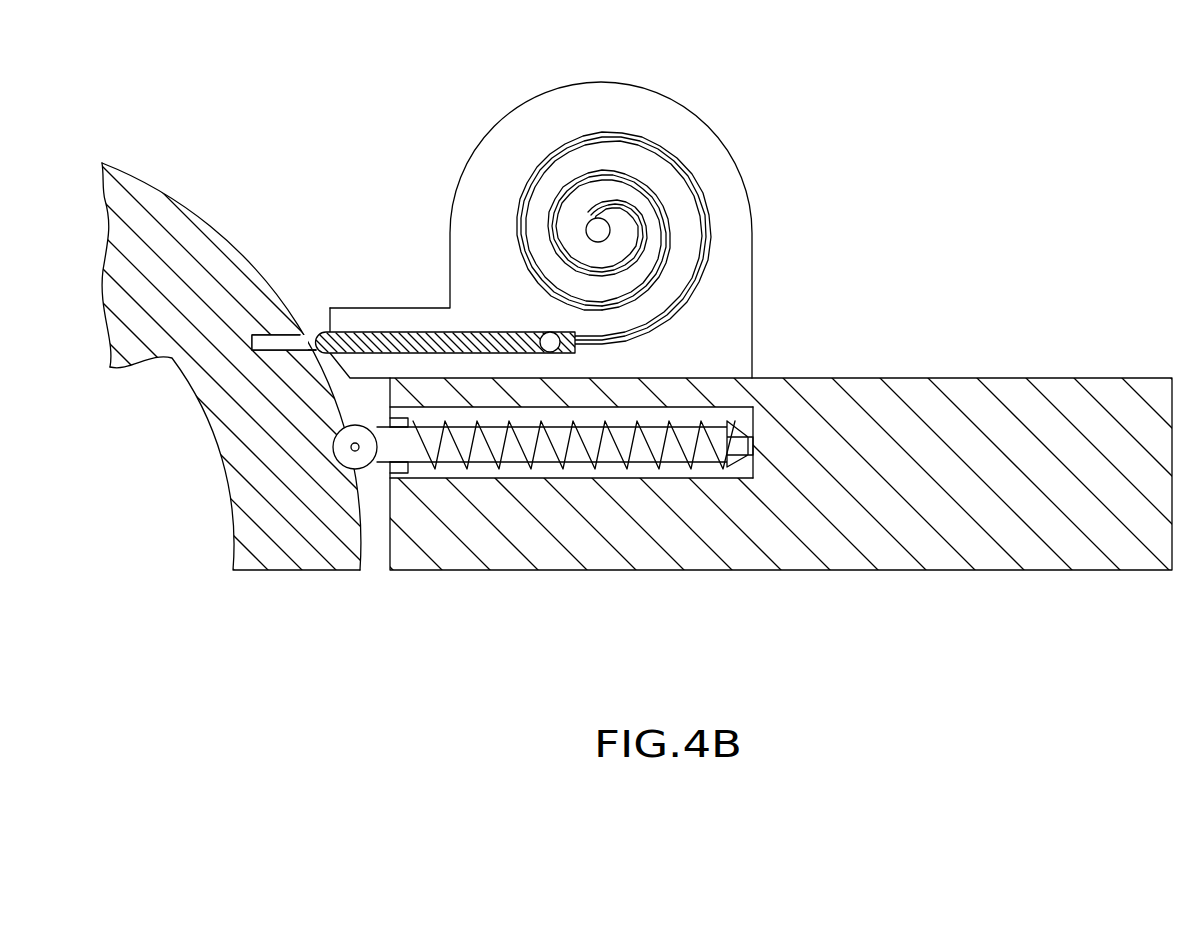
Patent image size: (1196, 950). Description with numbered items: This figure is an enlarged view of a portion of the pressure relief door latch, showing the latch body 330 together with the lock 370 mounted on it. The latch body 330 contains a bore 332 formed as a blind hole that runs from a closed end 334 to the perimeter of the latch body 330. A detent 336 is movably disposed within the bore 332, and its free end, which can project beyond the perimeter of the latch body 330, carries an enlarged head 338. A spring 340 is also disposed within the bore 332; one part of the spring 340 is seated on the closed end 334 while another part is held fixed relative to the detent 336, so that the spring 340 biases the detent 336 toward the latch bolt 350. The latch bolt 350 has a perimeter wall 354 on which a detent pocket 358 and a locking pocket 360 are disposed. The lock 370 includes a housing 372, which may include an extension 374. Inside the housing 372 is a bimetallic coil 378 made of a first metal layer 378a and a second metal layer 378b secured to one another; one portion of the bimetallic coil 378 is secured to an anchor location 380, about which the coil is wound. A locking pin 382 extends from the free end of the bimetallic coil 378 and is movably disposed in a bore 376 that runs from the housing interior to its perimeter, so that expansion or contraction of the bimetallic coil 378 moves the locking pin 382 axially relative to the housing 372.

The latch body 330 is at (698, 474).
The bore 332 is at (542, 480).
The closed end 334 is at (757, 412).
The detent 336 is at (485, 462).
The enlarged head 338 is at (336, 455).
The spring 340 is at (630, 467).
The latch bolt 350 is at (390, 305).
The perimeter wall 354 is at (207, 235).
The detent pocket 358 is at (333, 445).
The locking pocket 360 is at (252, 345).
The lock 370 is at (586, 203).
The housing 372 is at (755, 305).
The extension 374 is at (432, 308).
The bore 376 is at (502, 333).
The bimetallic coil 378 is at (601, 186).
The first metal layer 378a is at (562, 142).
The second metal layer 378b is at (546, 182).
The anchor location 380 is at (609, 229).
The locking pin 382 is at (378, 345).